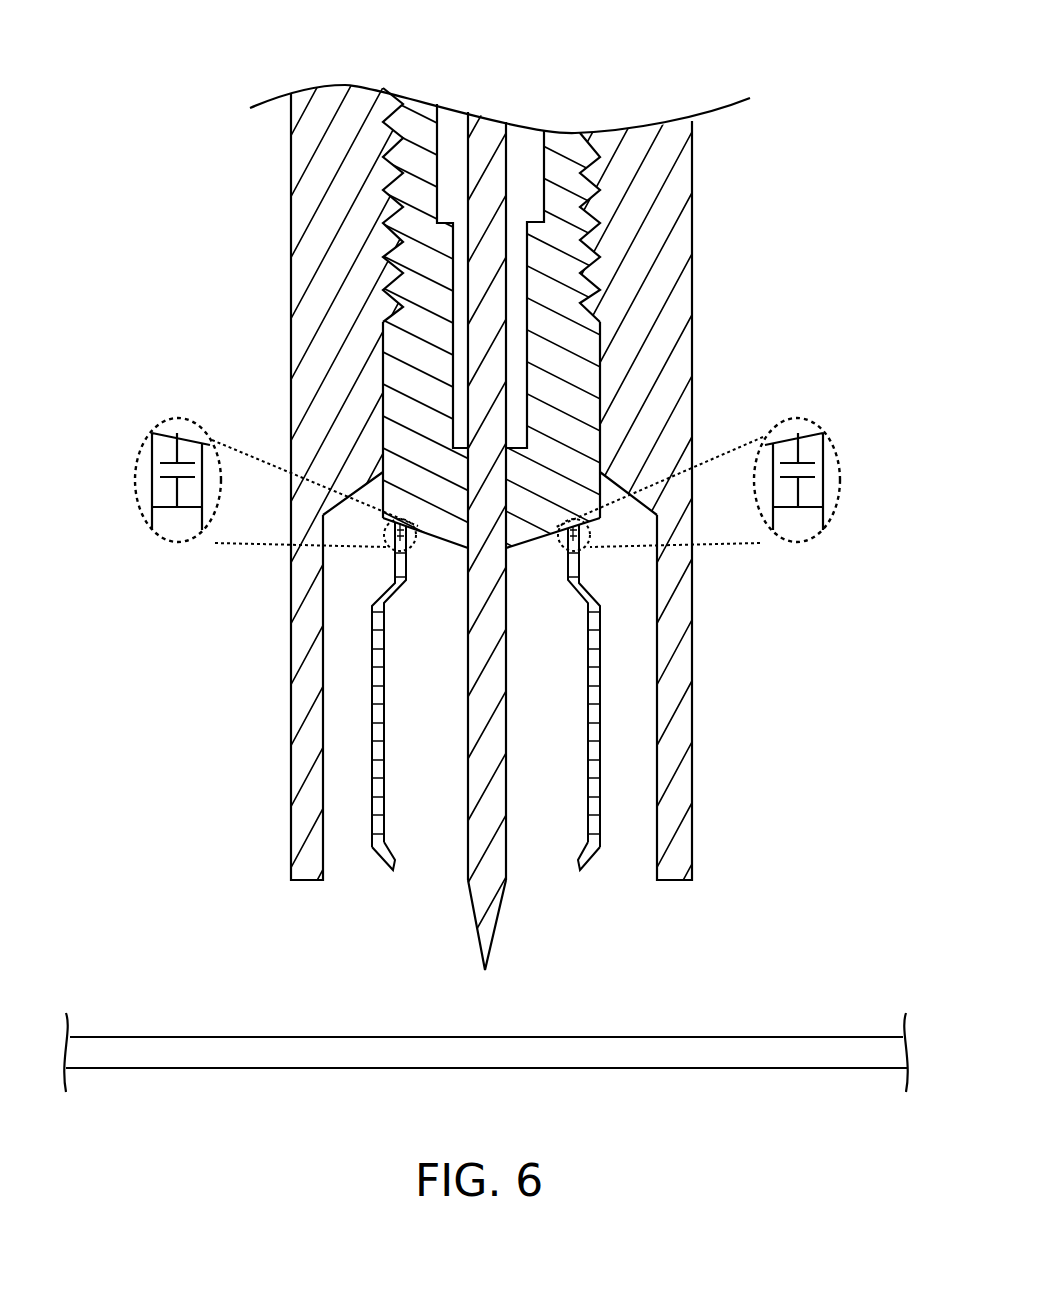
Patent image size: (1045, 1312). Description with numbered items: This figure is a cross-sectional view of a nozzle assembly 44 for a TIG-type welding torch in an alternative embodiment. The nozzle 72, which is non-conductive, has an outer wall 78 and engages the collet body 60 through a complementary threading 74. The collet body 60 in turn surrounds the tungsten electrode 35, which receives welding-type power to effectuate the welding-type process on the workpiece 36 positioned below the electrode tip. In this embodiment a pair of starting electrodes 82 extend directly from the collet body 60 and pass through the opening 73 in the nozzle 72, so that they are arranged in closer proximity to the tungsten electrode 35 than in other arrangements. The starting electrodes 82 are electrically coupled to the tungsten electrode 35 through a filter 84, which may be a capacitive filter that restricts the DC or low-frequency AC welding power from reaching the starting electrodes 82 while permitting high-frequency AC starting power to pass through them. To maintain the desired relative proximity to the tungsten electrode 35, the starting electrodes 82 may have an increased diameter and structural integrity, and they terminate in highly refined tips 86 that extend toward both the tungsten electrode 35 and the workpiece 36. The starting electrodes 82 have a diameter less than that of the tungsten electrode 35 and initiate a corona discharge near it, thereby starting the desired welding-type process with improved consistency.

The tungsten electrode 35 is at (507, 588).
The workpiece 36 is at (228, 1037).
The nozzle assembly 44 is at (750, 291).
The collet body 60 is at (554, 130).
The nozzle 72 is at (747, 662).
The opening 73 is at (603, 926).
The complementary threading 74 is at (392, 66).
The outer wall 78 is at (690, 752).
The starting electrodes 82 is at (384, 748).
The filter 84 is at (173, 453).
The tips 86 is at (412, 872).